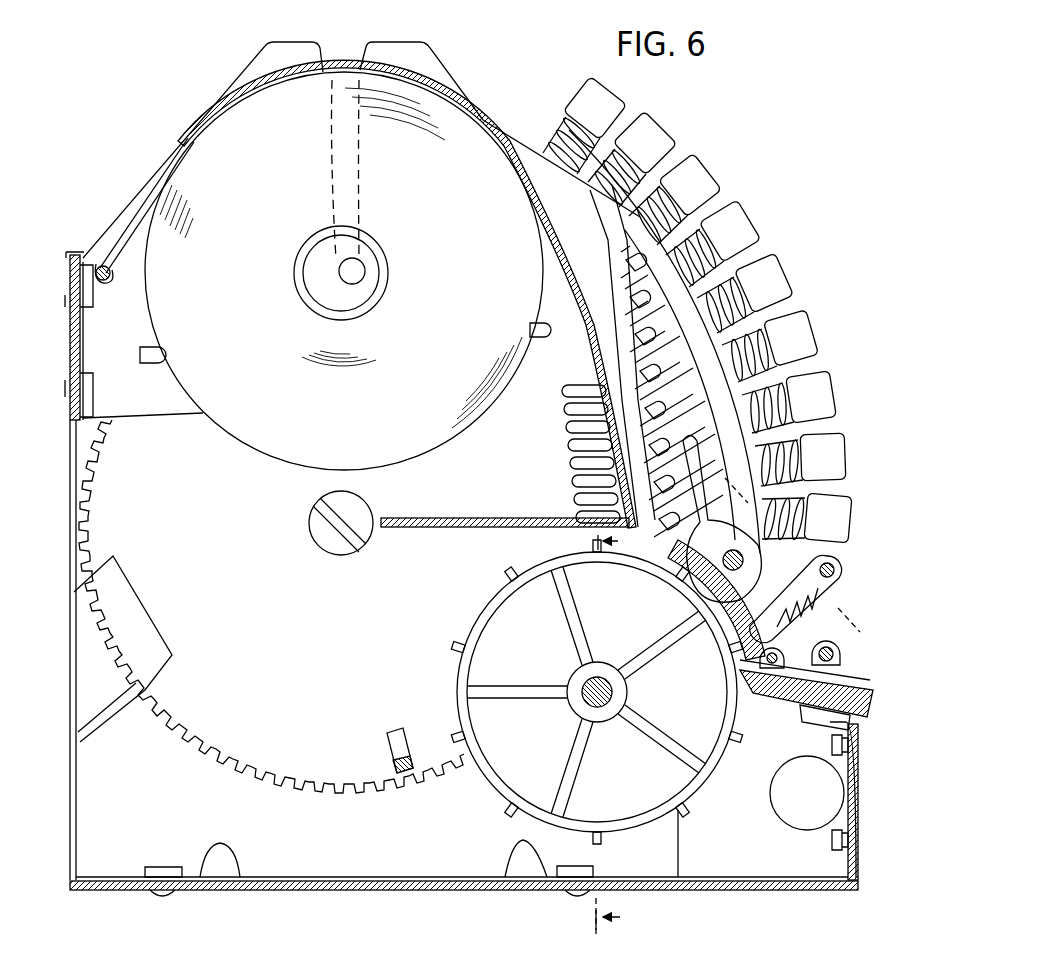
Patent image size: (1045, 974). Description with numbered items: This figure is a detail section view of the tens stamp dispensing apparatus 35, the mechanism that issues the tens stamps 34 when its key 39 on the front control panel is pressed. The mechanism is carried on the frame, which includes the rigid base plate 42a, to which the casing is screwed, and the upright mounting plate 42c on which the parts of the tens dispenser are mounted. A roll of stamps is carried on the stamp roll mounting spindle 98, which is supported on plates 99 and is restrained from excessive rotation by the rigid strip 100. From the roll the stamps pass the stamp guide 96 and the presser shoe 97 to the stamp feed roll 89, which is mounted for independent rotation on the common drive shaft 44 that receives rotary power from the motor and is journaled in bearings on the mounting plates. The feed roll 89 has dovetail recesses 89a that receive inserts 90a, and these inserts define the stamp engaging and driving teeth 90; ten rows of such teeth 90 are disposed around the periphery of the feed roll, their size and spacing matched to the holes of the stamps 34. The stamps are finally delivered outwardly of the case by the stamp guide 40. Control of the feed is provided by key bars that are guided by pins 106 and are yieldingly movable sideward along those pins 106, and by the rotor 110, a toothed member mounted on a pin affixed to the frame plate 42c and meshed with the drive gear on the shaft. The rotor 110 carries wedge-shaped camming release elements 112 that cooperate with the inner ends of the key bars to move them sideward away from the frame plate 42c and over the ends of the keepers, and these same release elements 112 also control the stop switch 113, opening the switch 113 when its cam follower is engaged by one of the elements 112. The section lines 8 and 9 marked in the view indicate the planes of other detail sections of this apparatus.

The tens stamp dispensing apparatus 35 is at (181, 146).
The rigid strip 100 is at (150, 197).
The plates 99 is at (415, 56).
The stamp roll mounting spindle 98 is at (357, 273).
The key 39 is at (772, 282).
The tens stamps 34 is at (586, 398).
The pins 106 is at (588, 430).
The section line 9 is at (736, 488).
The section line 8 is at (614, 733).
The presser shoe 97 is at (678, 568).
The inserts 90a is at (508, 581).
The dovetail recesses 89a is at (540, 580).
The rotor 110 is at (334, 624).
The stop switch 113 is at (158, 655).
The common drive shaft 44 is at (613, 692).
The camming release elements 112 is at (393, 746).
The stamp feed roll 89 is at (490, 772).
The upright mounting plate 42c is at (378, 840).
The rigid base plate 42a is at (233, 890).
The stamp engaging and driving teeth 90 is at (686, 806).
The stamp guide 96 is at (778, 693).
The stamp guide 40 is at (848, 682).